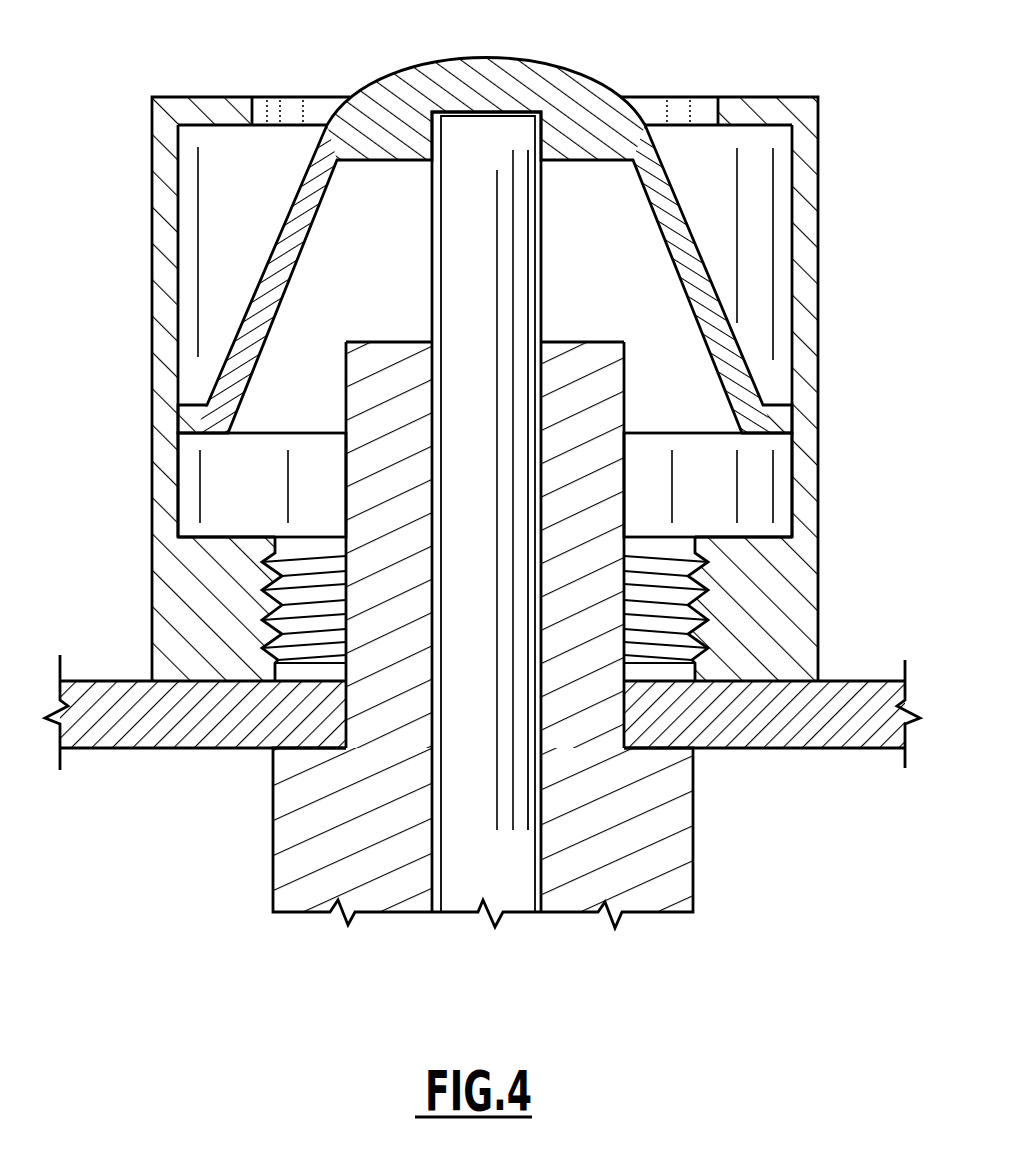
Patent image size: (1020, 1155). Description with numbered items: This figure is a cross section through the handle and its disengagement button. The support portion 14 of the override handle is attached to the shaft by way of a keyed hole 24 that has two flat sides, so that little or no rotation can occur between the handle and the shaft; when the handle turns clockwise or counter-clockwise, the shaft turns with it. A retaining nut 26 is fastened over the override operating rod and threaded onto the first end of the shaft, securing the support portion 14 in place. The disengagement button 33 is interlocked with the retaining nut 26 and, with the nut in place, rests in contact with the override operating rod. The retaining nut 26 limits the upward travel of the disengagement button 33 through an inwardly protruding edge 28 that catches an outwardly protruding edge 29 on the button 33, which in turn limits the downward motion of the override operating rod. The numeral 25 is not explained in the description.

The support portion 14 is at (112, 738).
The keyed hole 24 is at (586, 757).
The flange of bushing 25 is at (305, 752).
The retaining nut 26 is at (150, 360).
The inwardly protruding edge 28 is at (738, 127).
The outwardly protruding edge 29 is at (776, 410).
The disengagement button 33 is at (388, 107).